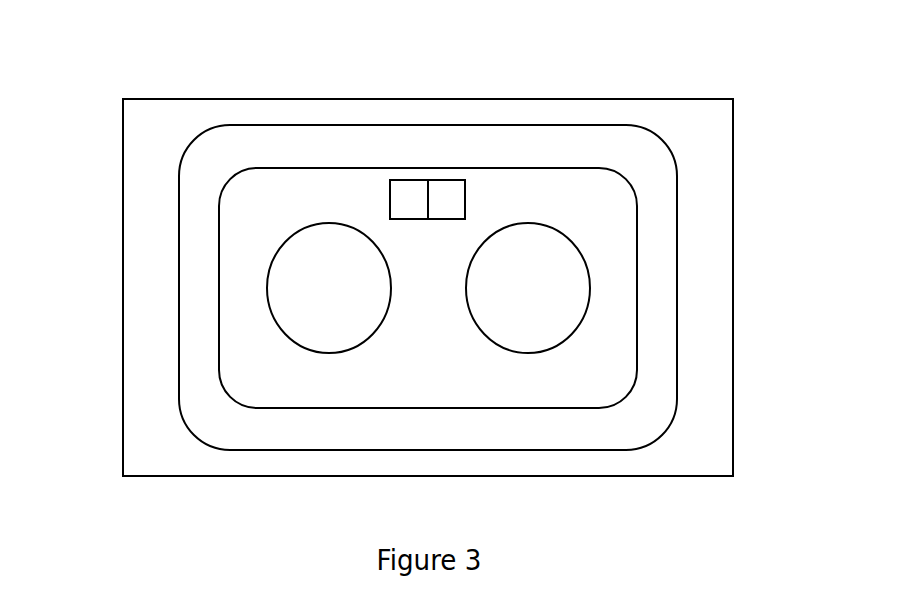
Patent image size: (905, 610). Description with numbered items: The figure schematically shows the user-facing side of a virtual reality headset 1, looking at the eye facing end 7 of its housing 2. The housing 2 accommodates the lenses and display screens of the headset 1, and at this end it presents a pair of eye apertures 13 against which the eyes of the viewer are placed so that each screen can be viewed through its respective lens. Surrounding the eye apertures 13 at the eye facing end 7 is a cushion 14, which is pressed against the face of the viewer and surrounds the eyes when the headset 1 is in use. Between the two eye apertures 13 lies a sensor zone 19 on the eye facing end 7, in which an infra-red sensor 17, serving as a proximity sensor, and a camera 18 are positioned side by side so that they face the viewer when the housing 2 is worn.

The virtual reality headset 1 is at (128, 81).
The housing 2 is at (685, 99).
The eye facing end 7 is at (613, 361).
The eye apertures 13 is at (267, 290).
The cushion 14 is at (677, 273).
The infra-red sensor 17 is at (410, 179).
The camera 18 is at (448, 179).
The sensor zone 19 is at (474, 180).